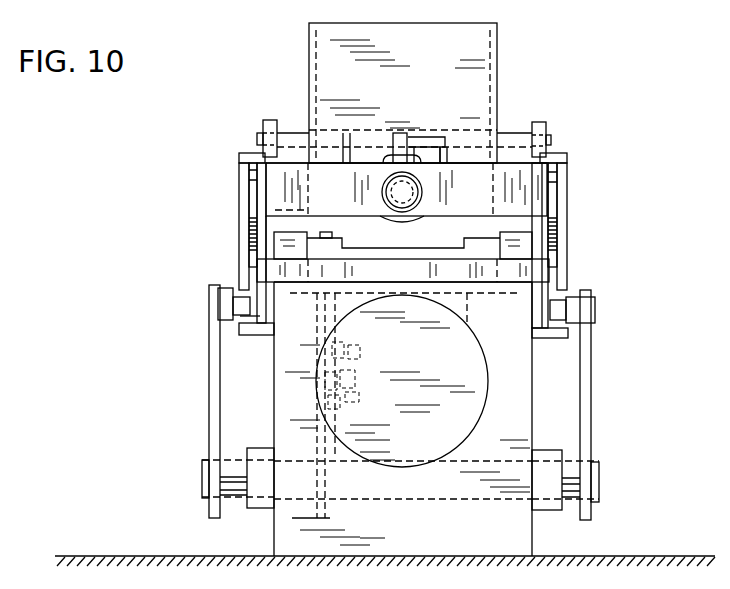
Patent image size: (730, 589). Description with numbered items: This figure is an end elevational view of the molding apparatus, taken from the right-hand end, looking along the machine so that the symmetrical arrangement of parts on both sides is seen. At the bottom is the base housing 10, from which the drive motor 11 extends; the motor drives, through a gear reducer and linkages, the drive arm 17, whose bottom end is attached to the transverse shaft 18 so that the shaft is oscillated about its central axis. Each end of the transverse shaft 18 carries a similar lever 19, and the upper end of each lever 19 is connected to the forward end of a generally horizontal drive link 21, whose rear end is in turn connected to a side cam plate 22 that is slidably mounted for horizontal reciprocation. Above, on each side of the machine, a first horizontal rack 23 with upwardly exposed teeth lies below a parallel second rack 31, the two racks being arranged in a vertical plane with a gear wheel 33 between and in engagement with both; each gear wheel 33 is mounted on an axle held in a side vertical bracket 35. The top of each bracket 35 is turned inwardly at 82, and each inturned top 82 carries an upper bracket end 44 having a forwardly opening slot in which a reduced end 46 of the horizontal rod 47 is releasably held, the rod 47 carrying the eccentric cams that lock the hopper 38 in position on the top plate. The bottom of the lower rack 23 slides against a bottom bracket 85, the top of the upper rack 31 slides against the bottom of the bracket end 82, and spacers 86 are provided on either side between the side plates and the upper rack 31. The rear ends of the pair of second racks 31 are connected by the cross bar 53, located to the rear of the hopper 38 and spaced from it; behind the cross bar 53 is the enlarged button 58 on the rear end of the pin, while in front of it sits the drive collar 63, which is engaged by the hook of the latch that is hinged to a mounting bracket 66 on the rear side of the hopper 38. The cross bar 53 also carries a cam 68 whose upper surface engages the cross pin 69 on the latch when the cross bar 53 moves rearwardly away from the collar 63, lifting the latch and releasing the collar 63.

The base housing 10 is at (450, 536).
The drive motor 11 is at (424, 351).
The drive arm 17 is at (317, 438).
The transverse shaft 18 is at (230, 462).
The lever 19 is at (209, 372).
The drive link 21 is at (237, 290).
The side cam plate 22 is at (254, 317).
The first horizontal rack 23 is at (264, 292).
The second rack 31 is at (249, 178).
The gear wheel 33 is at (252, 236).
The side vertical bracket 35 is at (243, 203).
The hopper 38 is at (482, 62).
The upper bracket end 44 is at (270, 120).
The reduced end 46 is at (254, 136).
The horizontal rod 47 is at (507, 132).
The cross bar 53 is at (475, 196).
The enlarged button 58 is at (384, 220).
The drive collar 63 is at (414, 220).
The mounting bracket 66 is at (400, 138).
The cam 68 is at (443, 160).
The cross pin 69 is at (425, 138).
The inturned bracket top 82 is at (246, 157).
The bottom bracket 85 is at (247, 336).
The spacer 86 is at (252, 175).